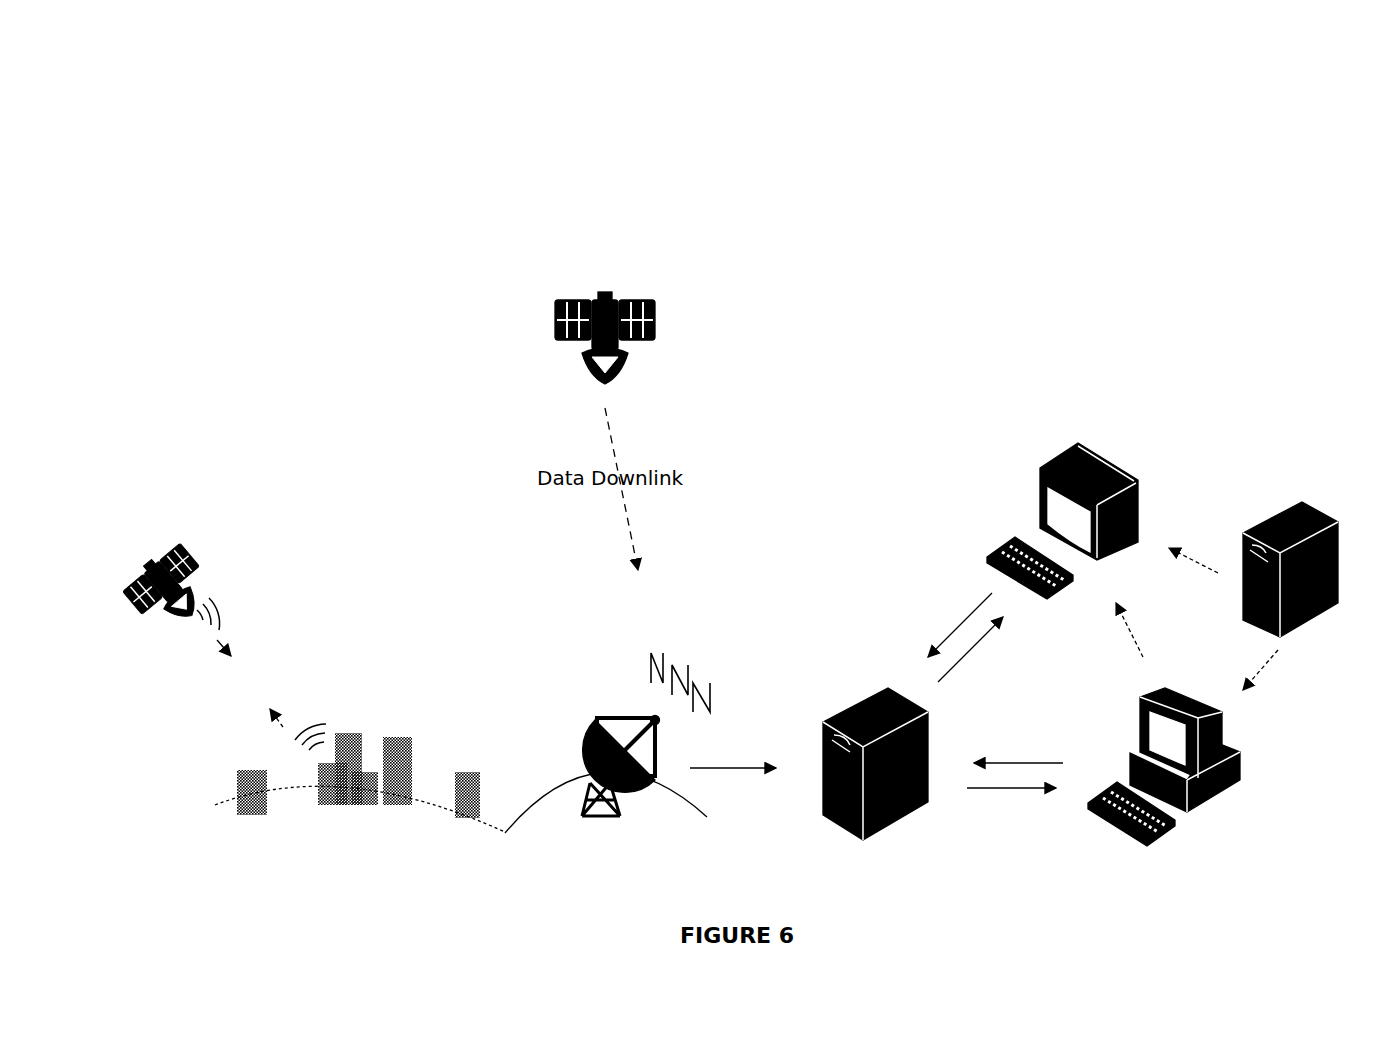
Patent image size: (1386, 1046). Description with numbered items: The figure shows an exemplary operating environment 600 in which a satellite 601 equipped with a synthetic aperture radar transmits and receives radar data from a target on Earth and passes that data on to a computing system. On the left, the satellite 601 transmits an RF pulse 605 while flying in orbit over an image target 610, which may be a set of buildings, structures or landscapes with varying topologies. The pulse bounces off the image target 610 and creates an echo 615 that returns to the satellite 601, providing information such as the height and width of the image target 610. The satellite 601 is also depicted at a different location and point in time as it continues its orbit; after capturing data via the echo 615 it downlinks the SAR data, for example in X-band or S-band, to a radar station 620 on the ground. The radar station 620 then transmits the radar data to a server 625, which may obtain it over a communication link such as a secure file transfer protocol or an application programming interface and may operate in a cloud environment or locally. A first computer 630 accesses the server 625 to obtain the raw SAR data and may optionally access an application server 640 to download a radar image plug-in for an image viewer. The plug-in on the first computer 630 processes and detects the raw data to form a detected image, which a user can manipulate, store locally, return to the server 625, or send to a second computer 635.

The operating environment 600 is at (200, 110).
The satellite 601 is at (659, 287).
The RF pulse 605 is at (232, 627).
The image target 610 is at (408, 724).
The echo 615 is at (262, 752).
The radar station 620 is at (585, 710).
The server 625 is at (840, 704).
The first computer 630 is at (1250, 760).
The second computer 635 is at (1040, 454).
The application server 640 is at (1279, 506).